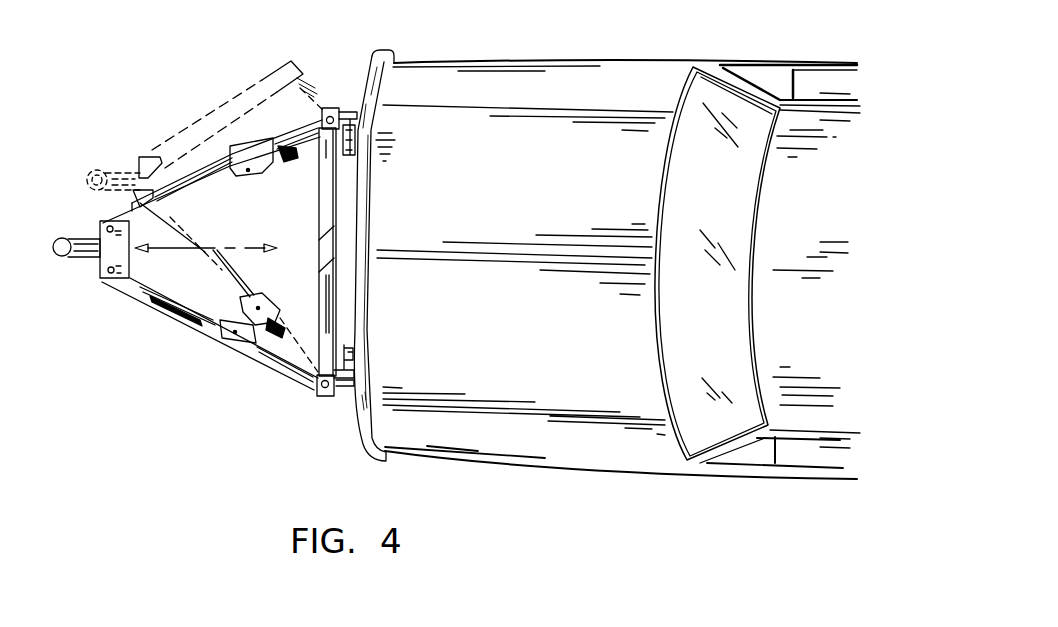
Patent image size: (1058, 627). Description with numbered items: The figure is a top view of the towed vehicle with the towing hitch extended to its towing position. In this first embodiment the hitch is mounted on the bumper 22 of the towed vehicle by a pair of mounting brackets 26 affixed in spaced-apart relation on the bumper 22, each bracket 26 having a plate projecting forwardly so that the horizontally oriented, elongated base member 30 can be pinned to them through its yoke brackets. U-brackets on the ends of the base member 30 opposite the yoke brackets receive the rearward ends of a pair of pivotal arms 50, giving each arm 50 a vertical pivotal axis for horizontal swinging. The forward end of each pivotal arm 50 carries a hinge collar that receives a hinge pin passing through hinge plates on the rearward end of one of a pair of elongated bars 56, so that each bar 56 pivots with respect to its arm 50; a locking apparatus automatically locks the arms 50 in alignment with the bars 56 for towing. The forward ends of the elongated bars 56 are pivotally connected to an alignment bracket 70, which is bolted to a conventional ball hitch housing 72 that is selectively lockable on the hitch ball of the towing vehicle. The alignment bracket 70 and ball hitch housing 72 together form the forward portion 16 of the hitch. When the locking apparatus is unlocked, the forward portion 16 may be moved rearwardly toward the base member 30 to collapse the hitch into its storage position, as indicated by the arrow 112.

The forward portion 16 is at (66, 205).
The bumper 22 is at (386, 54).
The mounting brackets 26 is at (350, 112).
The base member 30 is at (322, 202).
The pivotal arms 50 is at (293, 368).
The elongated bars 56 is at (168, 308).
The alignment bracket 70 is at (102, 281).
The ball hitch housing 72 is at (67, 258).
The arrow 112 is at (216, 252).